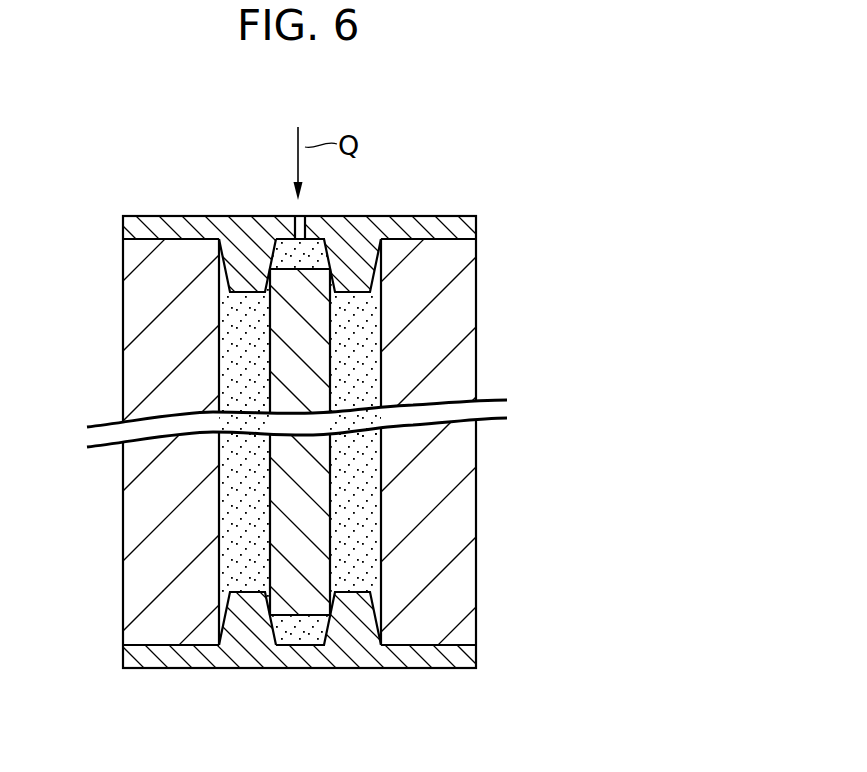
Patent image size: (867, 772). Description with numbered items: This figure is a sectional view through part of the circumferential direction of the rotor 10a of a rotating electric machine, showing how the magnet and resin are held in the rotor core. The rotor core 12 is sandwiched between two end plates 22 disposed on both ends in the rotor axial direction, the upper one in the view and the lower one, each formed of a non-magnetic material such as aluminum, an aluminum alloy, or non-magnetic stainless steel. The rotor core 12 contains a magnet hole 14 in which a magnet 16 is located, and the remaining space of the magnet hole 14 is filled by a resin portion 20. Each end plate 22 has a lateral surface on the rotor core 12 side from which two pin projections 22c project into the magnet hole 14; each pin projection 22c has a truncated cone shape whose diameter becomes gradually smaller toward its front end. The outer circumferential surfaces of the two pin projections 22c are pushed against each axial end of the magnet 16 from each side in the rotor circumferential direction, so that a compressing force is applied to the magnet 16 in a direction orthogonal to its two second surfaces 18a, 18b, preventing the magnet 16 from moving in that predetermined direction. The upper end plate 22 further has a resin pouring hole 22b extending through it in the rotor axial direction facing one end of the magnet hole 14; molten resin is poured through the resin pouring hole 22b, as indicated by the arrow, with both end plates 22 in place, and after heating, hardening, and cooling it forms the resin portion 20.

The rotor 10a is at (418, 180).
The rotor core 12 is at (430, 332).
The magnet hole 14 is at (372, 540).
The magnet 16 is at (307, 588).
The second surface 18a is at (275, 508).
The second surface 18b is at (333, 459).
The resin portion 20 is at (240, 357).
The end plate 22 is at (442, 217).
The resin pouring hole 22b is at (293, 232).
The pin projection 22c is at (242, 272).